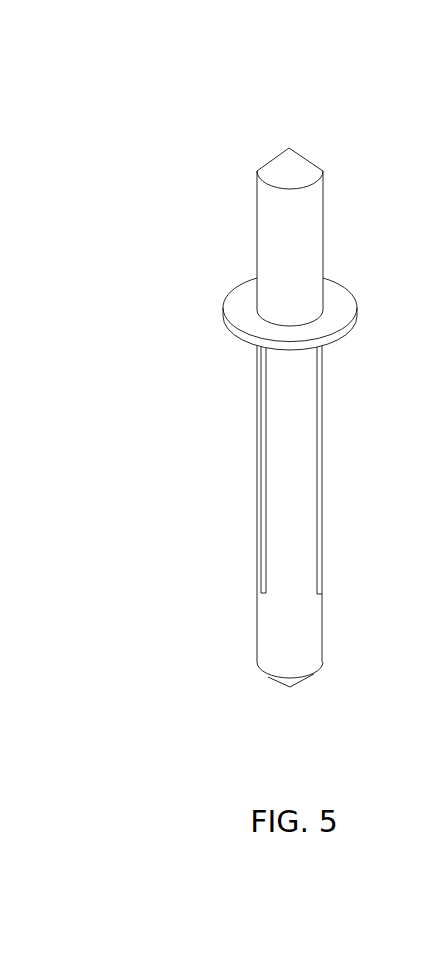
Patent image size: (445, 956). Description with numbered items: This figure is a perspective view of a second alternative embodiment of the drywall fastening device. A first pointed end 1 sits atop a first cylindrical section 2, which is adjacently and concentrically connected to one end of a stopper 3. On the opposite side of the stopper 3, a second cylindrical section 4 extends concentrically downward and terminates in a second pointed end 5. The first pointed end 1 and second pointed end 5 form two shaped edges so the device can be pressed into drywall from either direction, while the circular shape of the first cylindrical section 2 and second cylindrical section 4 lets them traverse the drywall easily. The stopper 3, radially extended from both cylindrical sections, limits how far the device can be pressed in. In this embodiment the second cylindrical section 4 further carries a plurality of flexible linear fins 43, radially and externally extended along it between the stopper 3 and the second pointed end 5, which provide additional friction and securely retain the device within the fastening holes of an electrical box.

The first pointed end 1 is at (292, 167).
The first cylindrical section 2 is at (312, 244).
The stopper 3 is at (232, 300).
The second cylindrical section 4 is at (250, 452).
The flexible linear fins 43 is at (262, 591).
The second pointed end 5 is at (289, 688).